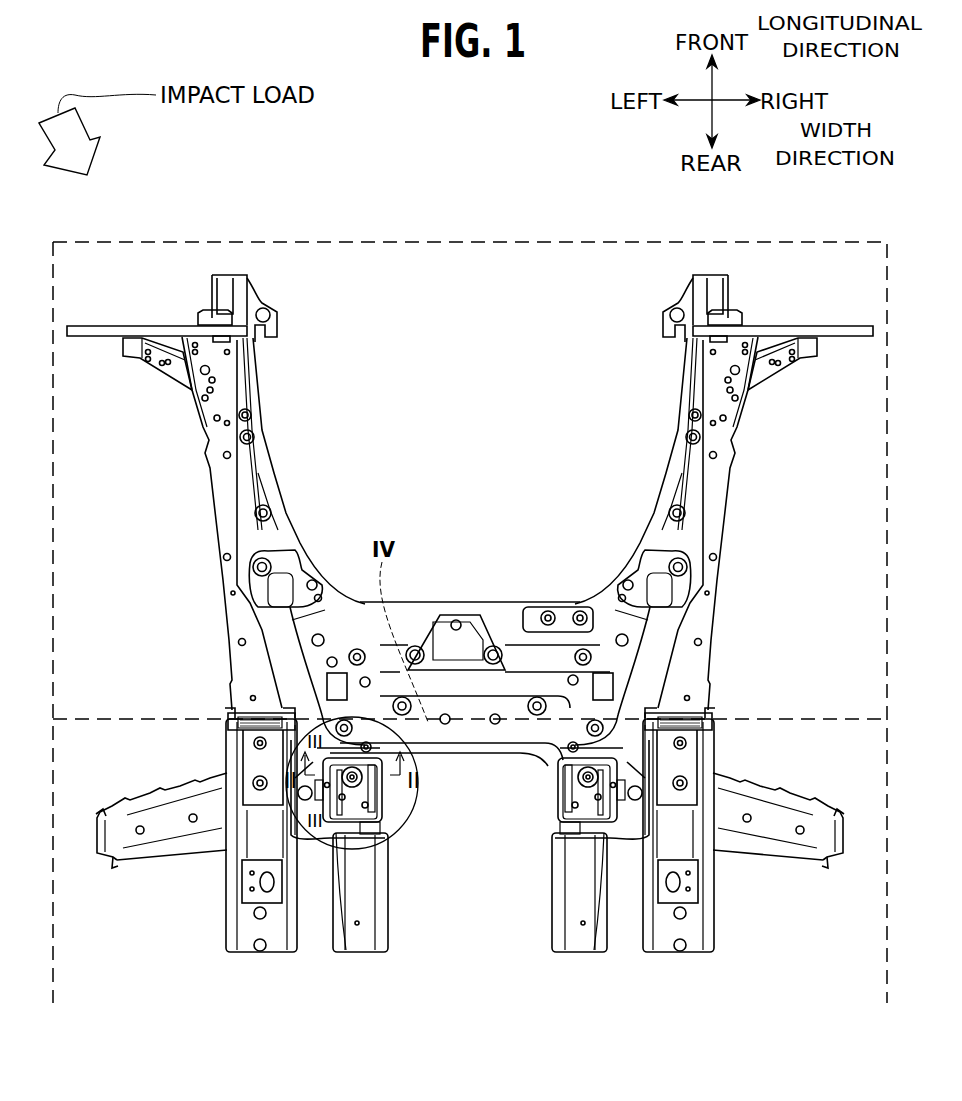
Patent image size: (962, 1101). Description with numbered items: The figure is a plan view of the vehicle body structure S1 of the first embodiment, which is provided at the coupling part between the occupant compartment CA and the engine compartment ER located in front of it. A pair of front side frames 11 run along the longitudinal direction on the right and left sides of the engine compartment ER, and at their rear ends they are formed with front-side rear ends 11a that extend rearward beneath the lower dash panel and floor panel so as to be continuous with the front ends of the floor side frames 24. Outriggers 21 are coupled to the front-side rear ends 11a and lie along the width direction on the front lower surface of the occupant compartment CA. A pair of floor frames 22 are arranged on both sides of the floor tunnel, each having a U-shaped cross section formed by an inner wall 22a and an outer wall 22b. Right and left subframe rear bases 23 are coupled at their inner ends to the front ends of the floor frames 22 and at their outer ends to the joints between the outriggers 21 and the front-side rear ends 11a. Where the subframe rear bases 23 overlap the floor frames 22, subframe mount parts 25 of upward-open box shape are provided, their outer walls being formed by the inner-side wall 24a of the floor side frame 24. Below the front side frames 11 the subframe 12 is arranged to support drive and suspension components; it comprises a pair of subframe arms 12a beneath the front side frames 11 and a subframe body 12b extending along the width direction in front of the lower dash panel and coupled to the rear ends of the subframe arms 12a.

The front side frame 11 is at (215, 475).
The front-side rear end 11a is at (228, 705).
The subframe 12 is at (470, 551).
The subframe arm 12a is at (258, 393).
The subframe body 12b is at (460, 602).
The outrigger 21 is at (182, 784).
The floor frame 22 is at (552, 924).
The inner wall 22a is at (365, 835).
The outer wall 22b is at (346, 840).
The subframe rear base 23 is at (292, 840).
The floor side frame 24 is at (226, 913).
The wall 24a is at (280, 905).
The subframe mount part 25 is at (556, 793).
The vehicle body structure S1 is at (531, 172).
The engine compartment ER is at (468, 240).
The occupant compartment CA is at (53, 965).